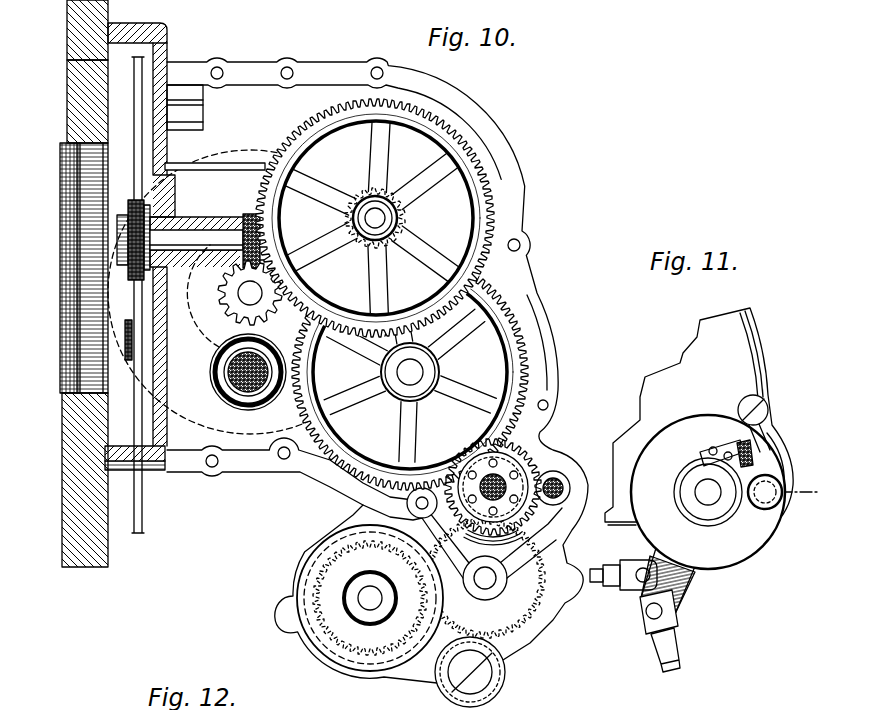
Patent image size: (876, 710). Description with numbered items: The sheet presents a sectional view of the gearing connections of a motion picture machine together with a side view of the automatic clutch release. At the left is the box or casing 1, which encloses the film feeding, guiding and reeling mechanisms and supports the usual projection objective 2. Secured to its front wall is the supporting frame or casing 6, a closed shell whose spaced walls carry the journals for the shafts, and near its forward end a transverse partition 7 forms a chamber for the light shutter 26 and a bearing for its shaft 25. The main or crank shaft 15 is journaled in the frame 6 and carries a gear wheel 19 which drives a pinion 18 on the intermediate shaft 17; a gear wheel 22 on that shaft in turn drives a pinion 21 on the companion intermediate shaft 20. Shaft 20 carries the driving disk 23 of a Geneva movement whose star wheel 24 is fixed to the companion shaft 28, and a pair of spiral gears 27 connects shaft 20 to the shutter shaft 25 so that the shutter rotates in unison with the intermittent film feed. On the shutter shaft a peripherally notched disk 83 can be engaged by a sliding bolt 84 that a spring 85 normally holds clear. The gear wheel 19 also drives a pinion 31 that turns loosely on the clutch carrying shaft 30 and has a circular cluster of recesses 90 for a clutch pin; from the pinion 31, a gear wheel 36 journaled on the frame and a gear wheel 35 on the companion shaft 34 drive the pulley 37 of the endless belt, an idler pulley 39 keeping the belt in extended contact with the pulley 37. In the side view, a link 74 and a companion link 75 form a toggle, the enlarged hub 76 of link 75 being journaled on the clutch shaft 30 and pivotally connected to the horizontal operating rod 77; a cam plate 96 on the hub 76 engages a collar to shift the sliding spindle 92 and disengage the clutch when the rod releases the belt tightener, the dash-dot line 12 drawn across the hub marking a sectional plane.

In FIG. 10, the box or casing 1 is at (80, 27).
In FIG. 10, the light shutter 26 is at (100, 79).
In FIG. 10, the projection objective 2 is at (58, 270).
In FIG. 10, the supporting frame or casing 6 is at (255, 68).
In FIG. 11, the supporting frame or casing 6 is at (699, 428).
In FIG. 10, the transverse partition 7 is at (160, 140).
In FIG. 10, the peripherally notched disk 83 is at (129, 198).
In FIG. 10, the sliding bolt 84 is at (143, 503).
In FIG. 10, the spring 85 is at (130, 296).
In FIG. 10, the shaft 25 is at (192, 233).
In FIG. 10, the spiral gears 27 is at (248, 214).
In FIG. 10, the companion intermediate shaft 20 is at (227, 292).
In FIG. 10, the pinion 21 is at (223, 308).
In FIG. 10, the driving disk or member 23 is at (230, 320).
In FIG. 10, the companion shaft 28 is at (213, 372).
In FIG. 10, the driven member or star wheel 24 is at (210, 420).
In FIG. 10, the pinion 18 is at (375, 218).
In FIG. 10, the intermediate shaft 17 is at (388, 218).
In FIG. 10, the gear wheel 22 is at (490, 168).
In FIG. 10, the gear wheel 19 is at (528, 296).
In FIG. 10, the main or crank shaft 15 is at (410, 372).
In FIG. 10, the pinion 31 is at (475, 463).
In FIG. 10, the clutch carrying shaft 30 is at (500, 480).
In FIG. 11, the clutch carrying shaft 30 is at (700, 495).
In FIG. 10, the recesses 90 is at (532, 472).
In FIG. 10, the spindle or shaft 92 is at (567, 483).
In FIG. 11, the spindle or shaft 92 is at (785, 472).
In FIG. 10, the driving pulley 37 is at (332, 572).
In FIG. 10, the companion shaft 34 is at (367, 598).
In FIG. 10, the gear wheel 35 is at (332, 643).
In FIG. 10, the gear wheel 36 is at (533, 613).
In FIG. 10, the idler pulley 39 is at (505, 673).
In FIG. 11, the cam plate 96 is at (763, 443).
In FIG. 11, the enlarged hub 76 is at (697, 468).
In FIG. 11, the axis line 12 is at (714, 491).
In FIG. 11, the operating rod 77 is at (597, 567).
In FIG. 11, the companion link 75 is at (687, 580).
In FIG. 11, the link 74 is at (683, 664).